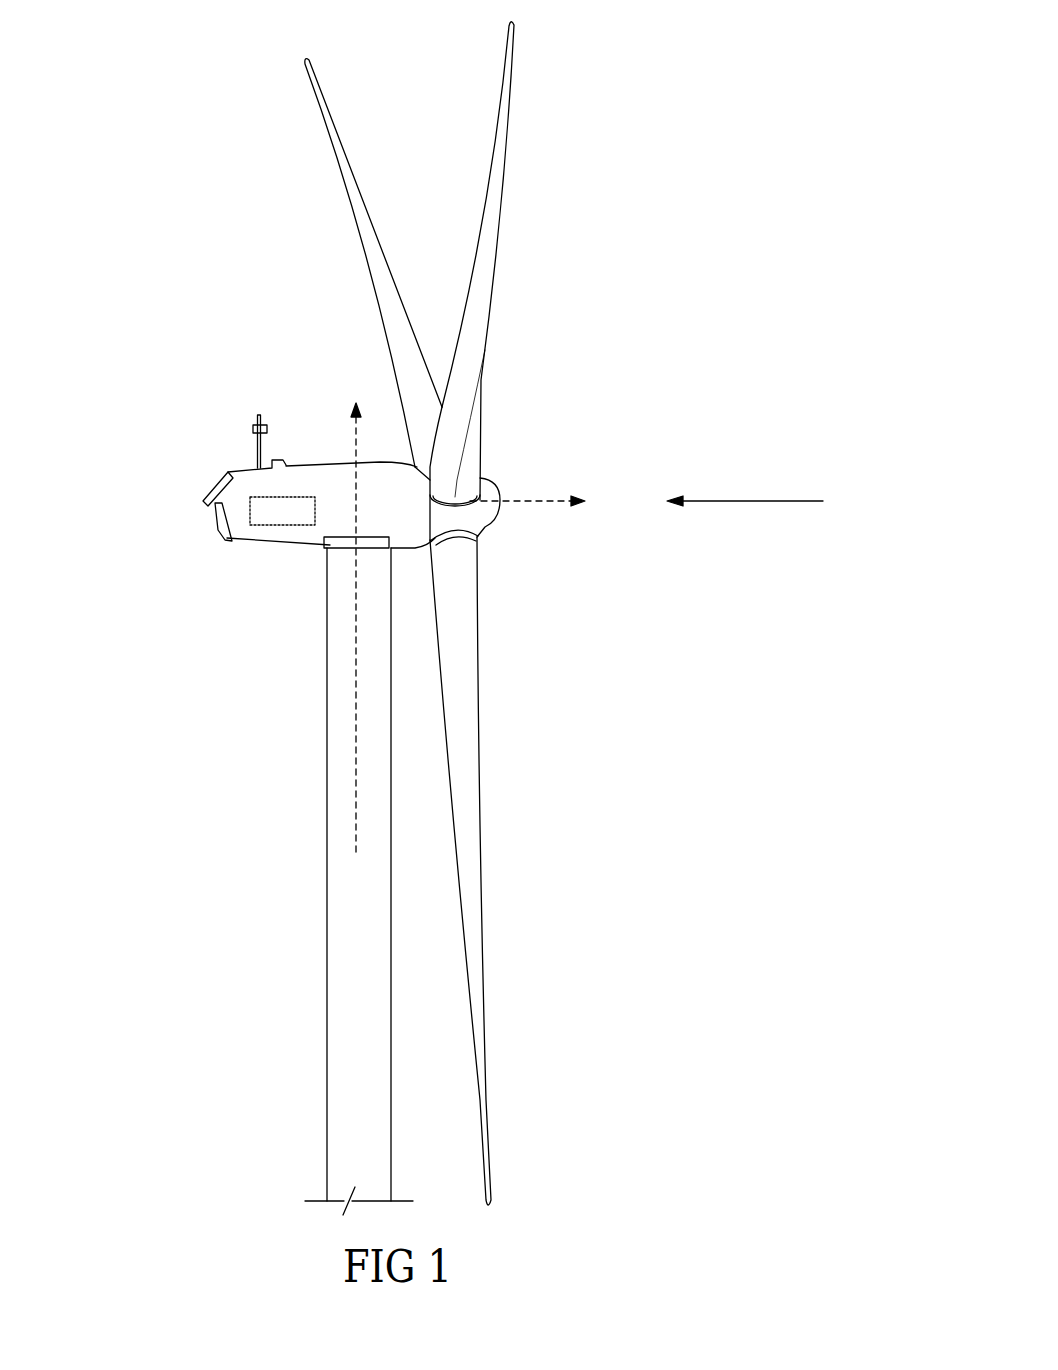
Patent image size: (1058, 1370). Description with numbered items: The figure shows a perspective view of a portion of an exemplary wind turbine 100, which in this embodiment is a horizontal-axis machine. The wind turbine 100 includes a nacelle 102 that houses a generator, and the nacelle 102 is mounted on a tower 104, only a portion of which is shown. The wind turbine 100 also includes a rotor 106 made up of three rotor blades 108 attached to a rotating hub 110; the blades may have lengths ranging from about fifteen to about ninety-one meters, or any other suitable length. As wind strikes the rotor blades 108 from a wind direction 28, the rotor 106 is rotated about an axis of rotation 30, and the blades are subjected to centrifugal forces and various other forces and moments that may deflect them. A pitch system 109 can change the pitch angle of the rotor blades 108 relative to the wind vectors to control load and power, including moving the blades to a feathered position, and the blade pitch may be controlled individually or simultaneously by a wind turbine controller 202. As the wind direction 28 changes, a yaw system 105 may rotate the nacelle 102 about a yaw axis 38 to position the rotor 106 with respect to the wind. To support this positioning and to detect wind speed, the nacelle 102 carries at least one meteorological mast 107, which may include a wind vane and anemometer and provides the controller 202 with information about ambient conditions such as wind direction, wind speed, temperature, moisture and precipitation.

The wind turbine 100 is at (231, 64).
The nacelle 102 is at (267, 549).
The tower 104 is at (327, 828).
The yaw system 105 is at (345, 540).
The rotor 106 is at (484, 613).
The meteorological mast 107 is at (260, 399).
The rotor blade 108 is at (343, 148).
The pitch system 109 is at (458, 530).
The hub 110 is at (495, 520).
The wind turbine controller 202 is at (260, 510).
The wind direction 28 is at (773, 500).
The axis of rotation 30 is at (533, 498).
The yaw axis 38 is at (357, 718).